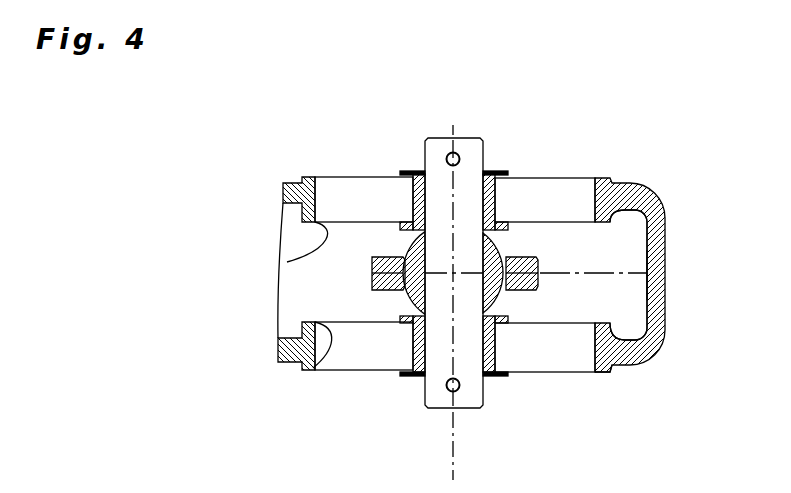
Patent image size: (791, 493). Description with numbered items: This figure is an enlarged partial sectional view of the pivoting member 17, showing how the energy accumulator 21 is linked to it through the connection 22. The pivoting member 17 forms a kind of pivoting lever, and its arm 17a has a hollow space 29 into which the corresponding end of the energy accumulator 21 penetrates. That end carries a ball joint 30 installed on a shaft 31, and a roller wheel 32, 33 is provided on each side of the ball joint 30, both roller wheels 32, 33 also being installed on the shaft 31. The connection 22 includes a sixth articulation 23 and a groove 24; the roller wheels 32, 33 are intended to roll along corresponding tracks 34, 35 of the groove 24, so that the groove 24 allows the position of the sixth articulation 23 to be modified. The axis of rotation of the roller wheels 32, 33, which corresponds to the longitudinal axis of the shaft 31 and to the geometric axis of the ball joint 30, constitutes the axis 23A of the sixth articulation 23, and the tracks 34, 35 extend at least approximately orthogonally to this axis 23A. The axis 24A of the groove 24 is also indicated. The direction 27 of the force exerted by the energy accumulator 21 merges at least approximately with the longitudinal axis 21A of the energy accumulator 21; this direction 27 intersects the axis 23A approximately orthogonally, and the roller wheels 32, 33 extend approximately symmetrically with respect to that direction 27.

The pivoting member 17 is at (651, 178).
The arm of the pivoting member 17a is at (632, 366).
The energy accumulator 21 is at (536, 262).
The longitudinal axis of the energy accumulator 21A is at (412, 303).
The connection 22 is at (413, 162).
The sixth articulation 23 is at (487, 160).
The axis of the sixth articulation 23A is at (455, 466).
The groove 24 is at (372, 273).
The axis of the groove 24A is at (627, 275).
The direction of the force exerted by the energy accumulator 27 is at (452, 273).
The hollow space 29 is at (625, 308).
The ball joint 30 is at (408, 250).
The shaft 31 is at (487, 140).
The roller wheel 32 is at (498, 207).
The roller wheel 33 is at (498, 352).
The track 34 is at (352, 188).
The track 35 is at (337, 355).